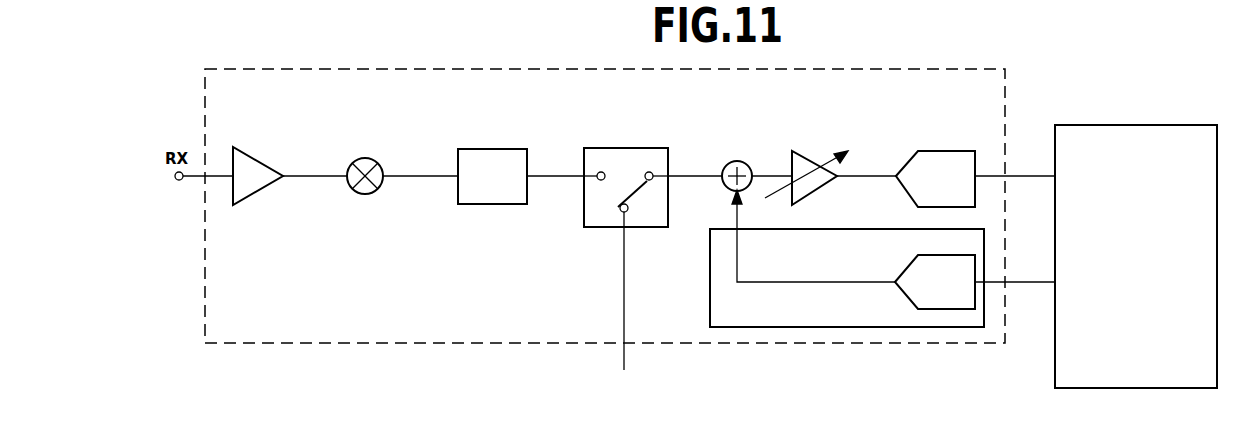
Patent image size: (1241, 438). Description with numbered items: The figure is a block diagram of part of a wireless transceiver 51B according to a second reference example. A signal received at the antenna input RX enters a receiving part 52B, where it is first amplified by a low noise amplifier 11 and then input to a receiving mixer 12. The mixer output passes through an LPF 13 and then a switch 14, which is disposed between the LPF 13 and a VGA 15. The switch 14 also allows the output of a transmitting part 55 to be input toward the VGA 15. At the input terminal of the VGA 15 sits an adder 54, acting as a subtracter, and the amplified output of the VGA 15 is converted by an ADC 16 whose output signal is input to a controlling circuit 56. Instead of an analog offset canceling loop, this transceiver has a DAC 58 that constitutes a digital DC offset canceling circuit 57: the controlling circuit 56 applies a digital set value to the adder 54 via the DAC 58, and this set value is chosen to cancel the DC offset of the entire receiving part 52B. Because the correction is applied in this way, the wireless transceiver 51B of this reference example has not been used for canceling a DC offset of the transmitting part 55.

The low noise amplifier 11 is at (255, 157).
The receiving mixer 12 is at (365, 157).
The LPF 13 is at (497, 148).
The switch 14 is at (647, 148).
The VGA 15 is at (806, 152).
The ADC 16 is at (950, 151).
The wireless transceiver 51B is at (332, 376).
The receiving part 52B is at (420, 343).
The adder 54 is at (739, 161).
The transmitting part 55 is at (624, 318).
The controlling circuit 56 is at (1160, 125).
The digital DC offset canceling circuit 57 is at (710, 290).
The DAC 58 is at (903, 270).